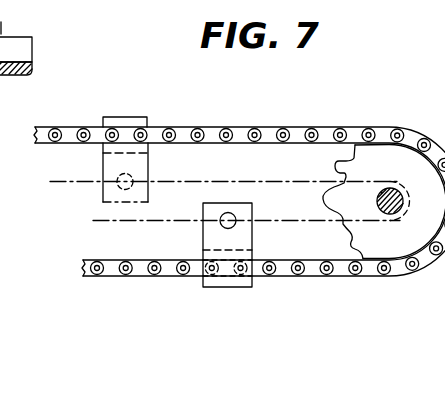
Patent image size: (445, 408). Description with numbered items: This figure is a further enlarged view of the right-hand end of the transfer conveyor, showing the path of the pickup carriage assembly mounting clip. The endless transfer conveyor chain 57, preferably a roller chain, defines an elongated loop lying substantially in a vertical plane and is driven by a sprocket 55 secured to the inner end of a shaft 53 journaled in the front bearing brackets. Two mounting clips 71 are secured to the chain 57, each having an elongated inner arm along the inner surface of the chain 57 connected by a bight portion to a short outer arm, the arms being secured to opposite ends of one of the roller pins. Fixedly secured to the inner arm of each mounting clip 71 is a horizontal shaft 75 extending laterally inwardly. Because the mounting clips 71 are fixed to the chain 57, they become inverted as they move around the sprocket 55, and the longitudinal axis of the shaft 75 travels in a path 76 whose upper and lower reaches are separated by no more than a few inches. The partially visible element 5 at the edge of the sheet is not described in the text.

The partially visible element 5 is at (16, 67).
The shaft 53 is at (412, 186).
The sprocket 55 is at (343, 169).
The transfer conveyor chain 57 is at (275, 127).
The mounting clip 71 is at (125, 117).
The horizontal shaft 75 is at (222, 223).
The path 76 is at (62, 184).